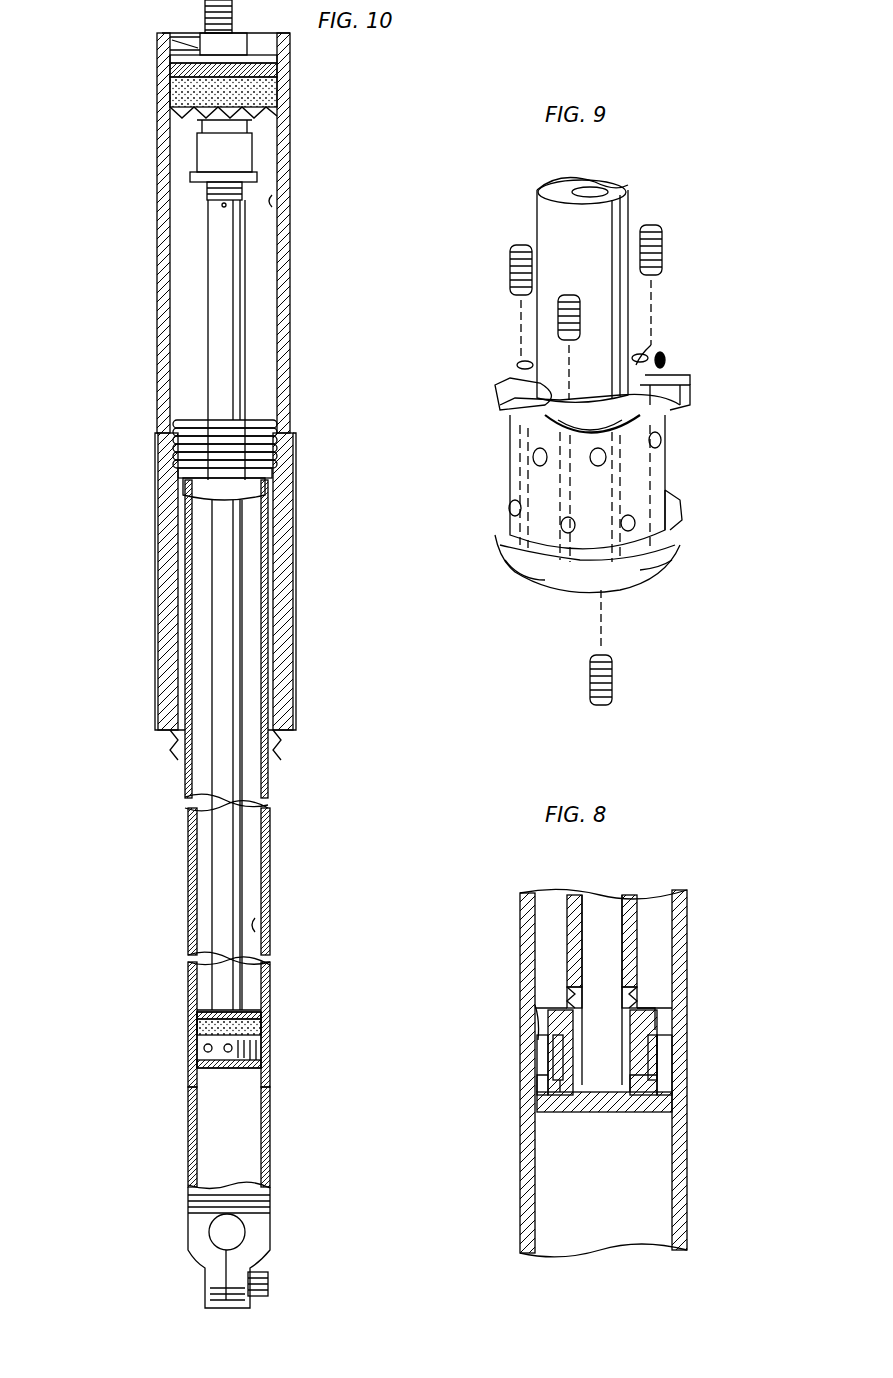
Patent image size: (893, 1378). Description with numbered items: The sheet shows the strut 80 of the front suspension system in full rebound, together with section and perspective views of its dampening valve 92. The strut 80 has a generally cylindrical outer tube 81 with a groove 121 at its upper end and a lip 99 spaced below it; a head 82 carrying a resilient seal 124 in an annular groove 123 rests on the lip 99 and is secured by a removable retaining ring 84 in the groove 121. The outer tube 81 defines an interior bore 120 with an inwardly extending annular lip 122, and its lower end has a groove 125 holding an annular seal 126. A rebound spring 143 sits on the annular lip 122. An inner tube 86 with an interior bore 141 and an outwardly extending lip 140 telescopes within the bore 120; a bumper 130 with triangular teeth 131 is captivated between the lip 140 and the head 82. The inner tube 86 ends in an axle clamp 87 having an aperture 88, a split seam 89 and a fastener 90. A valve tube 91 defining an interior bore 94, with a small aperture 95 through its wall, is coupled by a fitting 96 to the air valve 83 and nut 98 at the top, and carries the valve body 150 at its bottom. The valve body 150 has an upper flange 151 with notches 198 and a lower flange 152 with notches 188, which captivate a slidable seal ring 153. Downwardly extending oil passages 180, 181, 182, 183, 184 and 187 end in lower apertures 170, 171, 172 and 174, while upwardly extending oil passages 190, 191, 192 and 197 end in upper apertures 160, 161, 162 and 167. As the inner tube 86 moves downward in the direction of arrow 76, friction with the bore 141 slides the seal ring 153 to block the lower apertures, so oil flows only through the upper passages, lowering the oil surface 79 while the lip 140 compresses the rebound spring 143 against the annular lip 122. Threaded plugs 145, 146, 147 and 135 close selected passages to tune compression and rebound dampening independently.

In FIG. 10, the arrow 76 is at (287, 1040).
In FIG. 8, the arrow 76 is at (497, 1185).
In FIG. 10, the oil surface 79 is at (268, 486).
In FIG. 10, the strut 80 is at (300, 165).
In FIG. 10, the outer tube 81 is at (283, 124).
In FIG. 10, the head 82 is at (277, 60).
In FIG. 10, the valve 83 is at (232, 22).
In FIG. 10, the retaining ring 84 is at (257, 16).
In FIG. 10, the inner tube 86 is at (272, 862).
In FIG. 8, the inner tube 86 is at (688, 905).
In FIG. 10, the axle clamp 87 is at (186, 1258).
In FIG. 10, the aperture 88 is at (242, 1232).
In FIG. 10, the split seam 89 is at (218, 1290).
In FIG. 10, the fastener 90 is at (262, 1272).
In FIG. 10, the valve tube 91 is at (225, 822).
In FIG. 9, the valve tube 91 is at (612, 215).
In FIG. 8, the valve tube 91 is at (650, 900).
In FIG. 10, the valve 92 is at (192, 1043).
In FIG. 8, the valve 92 is at (520, 1032).
In FIG. 10, the interior bore 94 is at (222, 812).
In FIG. 9, the interior bore 94 is at (600, 183).
In FIG. 8, the interior bore 94 is at (620, 925).
In FIG. 10, the aperture 95 is at (222, 206).
In FIG. 10, the fitting 96 is at (208, 188).
In FIG. 10, the nut 98 is at (200, 36).
In FIG. 10, the lip 99 is at (277, 78).
In FIG. 10, the interior bore 120 is at (274, 202).
In FIG. 10, the groove 121 is at (170, 58).
In FIG. 10, the annular lip 122 is at (178, 474).
In FIG. 10, the annular groove 123 is at (172, 80).
In FIG. 10, the resilient seal 124 is at (192, 95).
In FIG. 10, the groove 125 is at (268, 735).
In FIG. 10, the annular seal 126 is at (190, 735).
In FIG. 10, the bumper 130 is at (190, 118).
In FIG. 10, the teeth 131 is at (205, 152).
In FIG. 9, the threaded plug 135 is at (613, 666).
In FIG. 10, the lip 140 is at (178, 420).
In FIG. 10, the interior bore 141 is at (262, 925).
In FIG. 8, the interior bore 141 is at (660, 940).
In FIG. 10, the rebound spring 143 is at (173, 445).
In FIG. 9, the threaded plug 145 is at (510, 258).
In FIG. 9, the threaded plug 146 is at (570, 295).
In FIG. 9, the threaded plug 147 is at (663, 240).
In FIG. 10, the valve body 150 is at (262, 1040).
In FIG. 9, the valve body 150 is at (670, 477).
In FIG. 8, the valve body 150 is at (680, 1045).
In FIG. 10, the upper flange 151 is at (265, 1000).
In FIG. 9, the upper flange 151 is at (648, 340).
In FIG. 8, the upper flange 151 is at (655, 1015).
In FIG. 10, the lower flange 152 is at (268, 1068).
In FIG. 9, the lower flange 152 is at (682, 545).
In FIG. 8, the lower flange 152 is at (535, 1093).
In FIG. 10, the seal ring 153 is at (205, 1020).
In FIG. 8, the seal ring 153 is at (675, 1095).
In FIG. 9, the aperture 160 is at (532, 455).
In FIG. 9, the aperture 161 is at (608, 455).
In FIG. 9, the aperture 162 is at (660, 436).
In FIG. 8, the aperture 167 is at (548, 1048).
In FIG. 10, the aperture 170 is at (205, 1050).
In FIG. 9, the aperture 170 is at (500, 522).
In FIG. 10, the aperture 171 is at (228, 1052).
In FIG. 9, the aperture 171 is at (545, 578).
In FIG. 10, the aperture 172 is at (232, 1068).
In FIG. 9, the aperture 172 is at (630, 545).
In FIG. 8, the aperture 174 is at (672, 1075).
In FIG. 9, the oil passage 180 is at (495, 390).
In FIG. 9, the oil passage 181 is at (498, 405).
In FIG. 9, the oil passage 182 is at (688, 394).
In FIG. 9, the oil passage 183 is at (670, 372).
In FIG. 9, the oil passage 184 is at (646, 355).
In FIG. 8, the oil passage 184 is at (645, 1005).
In FIG. 9, the oil passage 187 is at (522, 362).
In FIG. 9, the notches 188 is at (672, 525).
In FIG. 8, the notches 188 is at (680, 1110).
In FIG. 9, the oil passage 190 is at (527, 575).
In FIG. 9, the oil passage 191 is at (585, 598).
In FIG. 9, the oil passage 192 is at (680, 565).
In FIG. 8, the oil passage 197 is at (560, 1115).
In FIG. 9, the notches 198 is at (664, 356).
In FIG. 8, the notches 198 is at (540, 990).